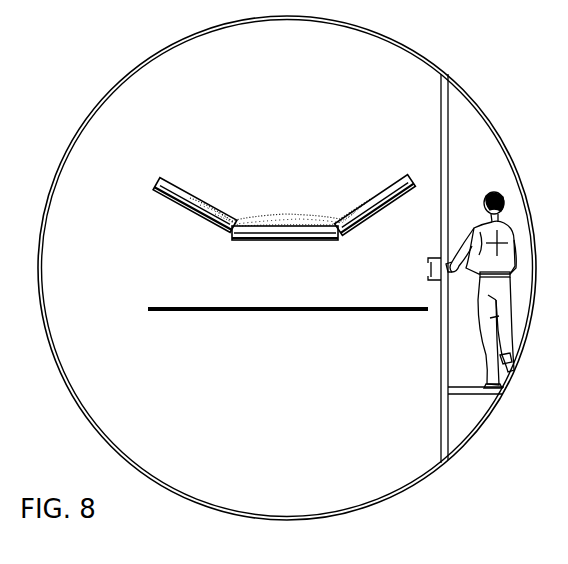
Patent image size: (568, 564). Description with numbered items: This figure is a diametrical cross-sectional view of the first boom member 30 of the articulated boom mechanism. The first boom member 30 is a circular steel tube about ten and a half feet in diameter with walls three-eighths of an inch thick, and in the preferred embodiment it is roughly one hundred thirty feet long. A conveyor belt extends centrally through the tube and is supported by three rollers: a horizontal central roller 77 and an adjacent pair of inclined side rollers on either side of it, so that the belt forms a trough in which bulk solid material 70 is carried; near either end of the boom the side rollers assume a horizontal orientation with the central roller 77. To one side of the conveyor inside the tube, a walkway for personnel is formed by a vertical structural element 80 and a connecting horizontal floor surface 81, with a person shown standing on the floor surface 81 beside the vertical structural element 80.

The first boom member 30 is at (52, 181).
The bulk solid material 70 is at (279, 213).
The horizontal central roller 77 is at (297, 241).
The vertical structural element 80 is at (441, 122).
The horizontal floor surface 81 is at (448, 393).